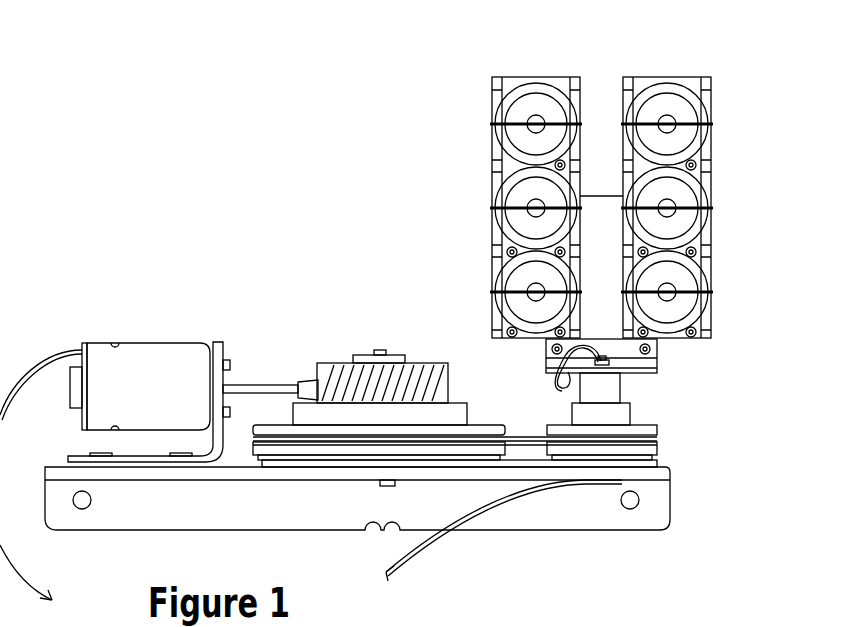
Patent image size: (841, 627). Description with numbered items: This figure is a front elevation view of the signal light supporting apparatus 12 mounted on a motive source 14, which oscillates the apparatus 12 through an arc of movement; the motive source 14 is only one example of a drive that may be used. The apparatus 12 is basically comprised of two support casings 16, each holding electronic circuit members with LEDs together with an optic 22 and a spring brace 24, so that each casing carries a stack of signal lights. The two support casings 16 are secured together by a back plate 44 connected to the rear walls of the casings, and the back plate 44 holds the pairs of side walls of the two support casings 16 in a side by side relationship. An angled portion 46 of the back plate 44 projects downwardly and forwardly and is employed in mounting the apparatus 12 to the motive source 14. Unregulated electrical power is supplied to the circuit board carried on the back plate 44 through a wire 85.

The signal light supporting apparatus 12 is at (630, 57).
The motive source 14 is at (236, 323).
The support casing 16 is at (492, 156).
The optic 22 is at (511, 95).
The spring brace 24 is at (492, 124).
The back plate 44 is at (612, 303).
The angled portion 46 is at (632, 357).
The wire 85 is at (570, 386).